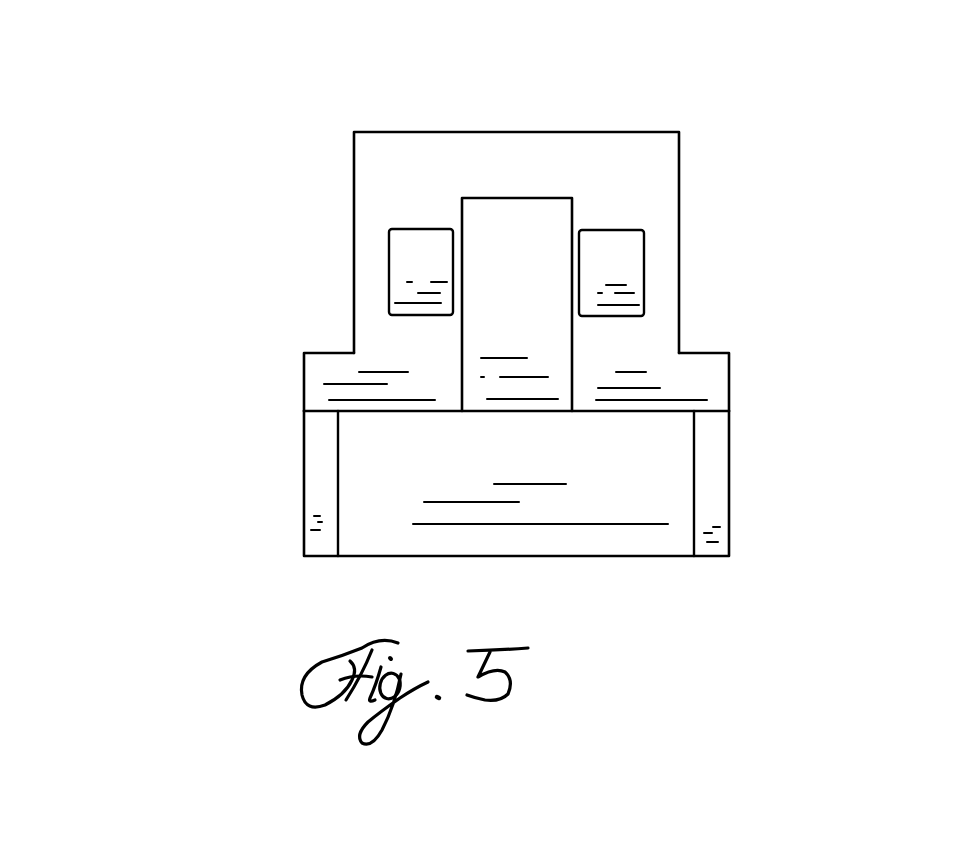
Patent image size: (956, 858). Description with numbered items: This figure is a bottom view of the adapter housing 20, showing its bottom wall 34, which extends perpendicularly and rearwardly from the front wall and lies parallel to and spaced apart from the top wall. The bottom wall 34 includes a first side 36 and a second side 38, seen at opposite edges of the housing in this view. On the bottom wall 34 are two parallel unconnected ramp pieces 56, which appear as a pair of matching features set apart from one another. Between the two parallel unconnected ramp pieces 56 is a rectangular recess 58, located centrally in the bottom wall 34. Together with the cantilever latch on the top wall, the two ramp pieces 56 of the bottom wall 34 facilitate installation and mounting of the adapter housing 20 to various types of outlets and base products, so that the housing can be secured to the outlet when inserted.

The adapter housing 20 is at (446, 288).
The bottom wall 34 is at (637, 155).
The first side 36 is at (353, 308).
The second side 38 is at (680, 326).
The two parallel unconnected ramp pieces 56 is at (414, 250).
The rectangular recess 58 is at (507, 228).